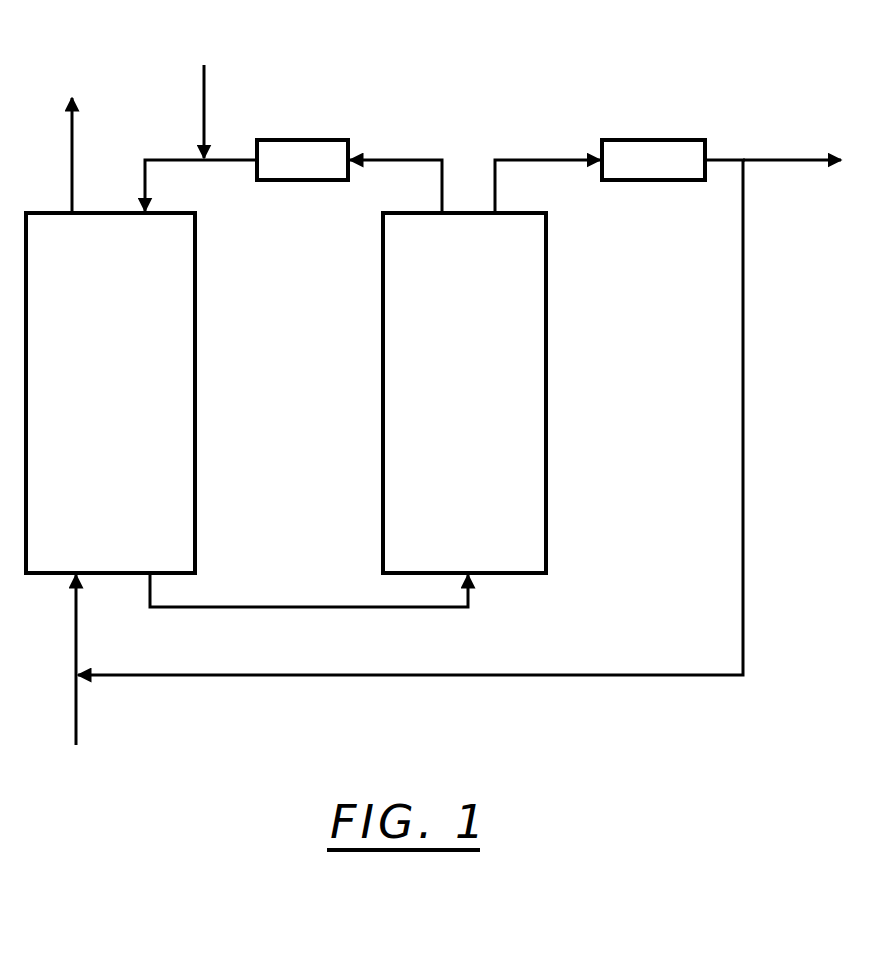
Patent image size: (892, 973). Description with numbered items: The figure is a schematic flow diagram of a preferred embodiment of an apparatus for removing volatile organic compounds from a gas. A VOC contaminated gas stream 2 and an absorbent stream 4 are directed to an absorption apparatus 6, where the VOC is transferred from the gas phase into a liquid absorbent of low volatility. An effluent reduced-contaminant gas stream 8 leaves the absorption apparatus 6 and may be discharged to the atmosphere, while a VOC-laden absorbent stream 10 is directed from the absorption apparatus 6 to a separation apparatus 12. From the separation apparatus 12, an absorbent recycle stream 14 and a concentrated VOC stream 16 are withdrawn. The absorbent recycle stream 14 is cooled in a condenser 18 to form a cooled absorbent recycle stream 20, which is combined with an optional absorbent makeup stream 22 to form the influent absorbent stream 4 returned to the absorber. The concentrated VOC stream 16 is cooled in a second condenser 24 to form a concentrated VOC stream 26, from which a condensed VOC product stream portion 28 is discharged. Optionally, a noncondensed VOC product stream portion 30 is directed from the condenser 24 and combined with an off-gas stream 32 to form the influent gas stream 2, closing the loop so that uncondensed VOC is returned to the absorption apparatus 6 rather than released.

The VOC contaminated gas stream 2 is at (76, 622).
The absorbent stream 4 is at (167, 160).
The absorption apparatus 6 is at (120, 398).
The effluent reduced-contaminant gas stream 8 is at (72, 155).
The VOC-laden absorbent stream 10 is at (282, 607).
The separation apparatus 12 is at (476, 398).
The absorbent recycle stream 14 is at (400, 160).
The concentrated VOC stream 16 is at (548, 160).
The condenser 18 is at (312, 174).
The cooled absorbent recycle stream 20 is at (240, 145).
The absorbent makeup stream 22 is at (204, 88).
The condenser 24 is at (668, 174).
The concentrated VOC stream 26 is at (718, 160).
The condensed VOC product stream portion 28 is at (764, 160).
The noncondensed VOC product stream portion 30 is at (420, 675).
The off-gas stream 32 is at (76, 708).